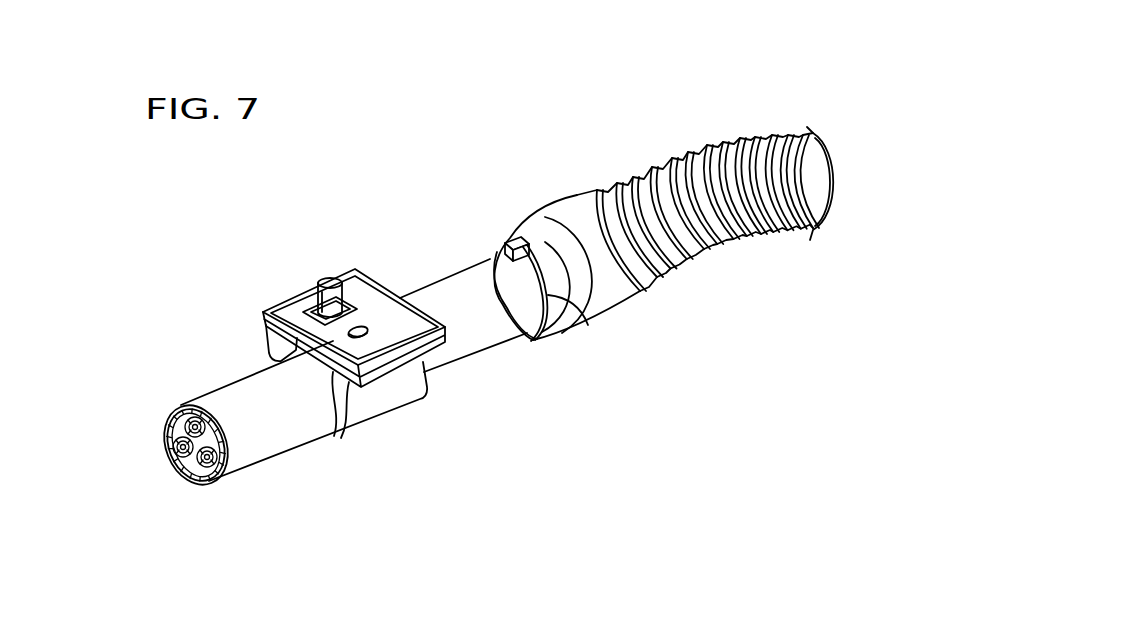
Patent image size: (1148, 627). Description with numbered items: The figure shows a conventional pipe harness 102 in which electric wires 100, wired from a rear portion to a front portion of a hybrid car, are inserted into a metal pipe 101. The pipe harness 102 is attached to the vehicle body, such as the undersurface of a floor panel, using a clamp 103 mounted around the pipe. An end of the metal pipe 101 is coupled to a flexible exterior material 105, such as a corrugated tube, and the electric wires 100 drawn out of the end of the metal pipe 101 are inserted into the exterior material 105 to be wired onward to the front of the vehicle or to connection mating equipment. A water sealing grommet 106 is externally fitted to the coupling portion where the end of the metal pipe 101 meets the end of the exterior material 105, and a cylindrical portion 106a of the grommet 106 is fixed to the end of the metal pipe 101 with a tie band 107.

The electric wires 100 is at (200, 482).
The metal pipe 101 is at (462, 290).
The pipe harness 102 is at (280, 456).
The clamp 103 is at (304, 285).
The exterior material 105 is at (680, 163).
The water sealing grommet 106 is at (554, 203).
The cylindrical portion 106a is at (537, 338).
The tie band 107 is at (588, 325).